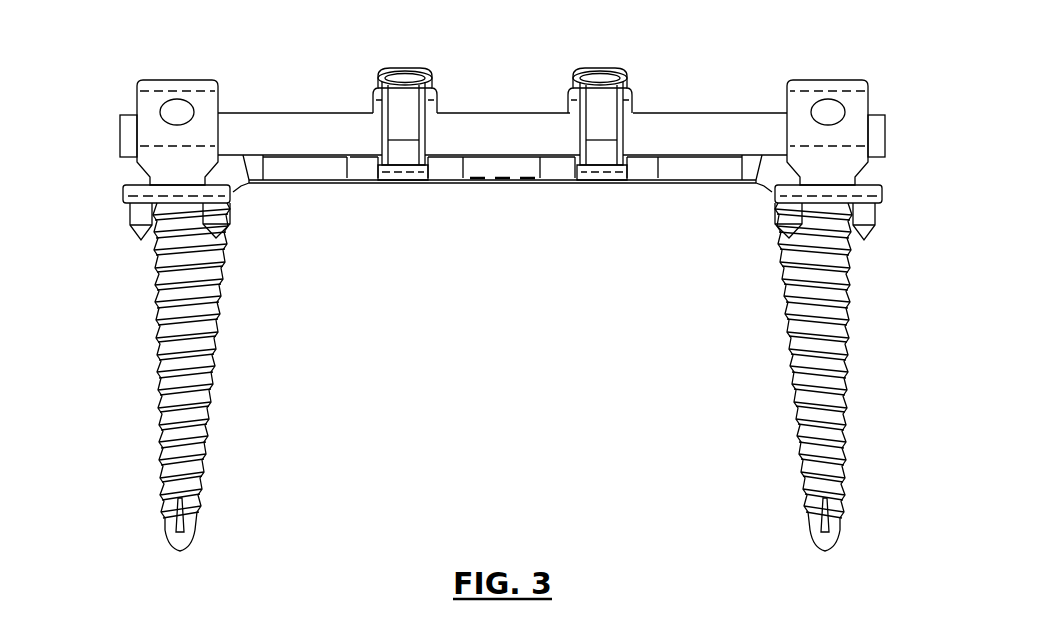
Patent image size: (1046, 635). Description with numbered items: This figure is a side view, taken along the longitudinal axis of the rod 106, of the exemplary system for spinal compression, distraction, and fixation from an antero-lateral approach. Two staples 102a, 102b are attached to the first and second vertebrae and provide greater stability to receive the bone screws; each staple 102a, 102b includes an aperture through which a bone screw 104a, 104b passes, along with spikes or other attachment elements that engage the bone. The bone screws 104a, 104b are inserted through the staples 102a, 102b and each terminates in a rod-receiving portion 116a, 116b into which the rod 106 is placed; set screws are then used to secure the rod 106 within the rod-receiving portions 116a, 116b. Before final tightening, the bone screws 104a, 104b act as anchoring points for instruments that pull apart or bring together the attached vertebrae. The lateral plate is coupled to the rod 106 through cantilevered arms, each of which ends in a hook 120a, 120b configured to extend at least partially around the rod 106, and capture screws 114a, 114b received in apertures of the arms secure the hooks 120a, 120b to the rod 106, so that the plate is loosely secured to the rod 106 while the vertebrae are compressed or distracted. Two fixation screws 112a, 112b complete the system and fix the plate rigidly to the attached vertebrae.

The rod 106 is at (312, 128).
The rod-receiving portion 116b is at (155, 98).
The rod-receiving portion 116a is at (833, 93).
The capture screw 114b is at (400, 78).
The capture screw 114a is at (605, 76).
The hook 120b is at (405, 133).
The hook 120a is at (605, 133).
The staple 102b is at (125, 200).
The staple 102a is at (877, 205).
The bone screw 104b is at (200, 440).
The bone screw 104a is at (808, 413).
The fixation screw 112b is at (230, 282).
The fixation screw 112a is at (782, 283).